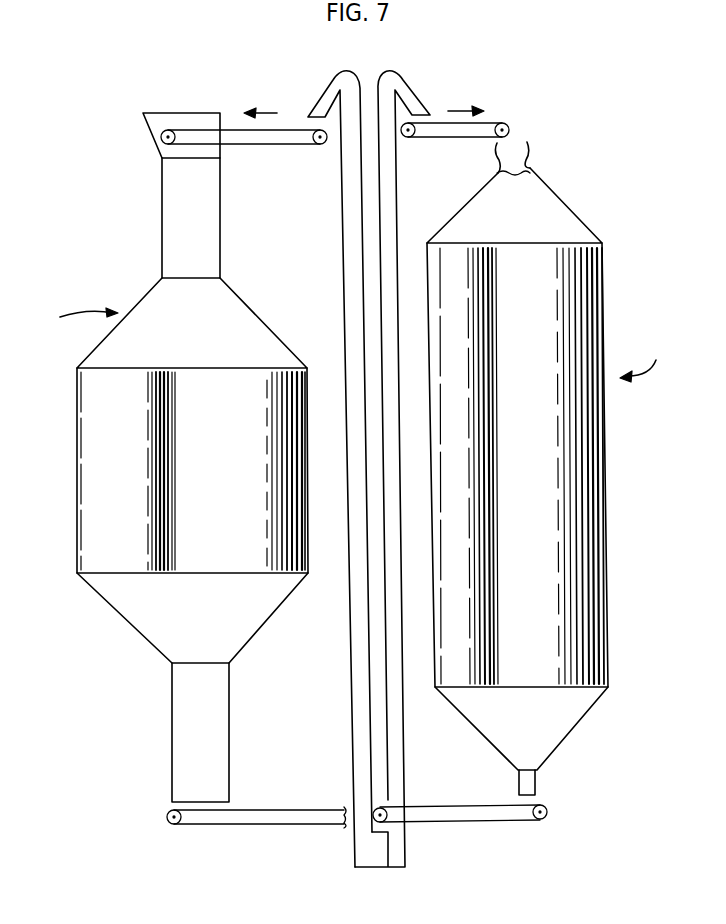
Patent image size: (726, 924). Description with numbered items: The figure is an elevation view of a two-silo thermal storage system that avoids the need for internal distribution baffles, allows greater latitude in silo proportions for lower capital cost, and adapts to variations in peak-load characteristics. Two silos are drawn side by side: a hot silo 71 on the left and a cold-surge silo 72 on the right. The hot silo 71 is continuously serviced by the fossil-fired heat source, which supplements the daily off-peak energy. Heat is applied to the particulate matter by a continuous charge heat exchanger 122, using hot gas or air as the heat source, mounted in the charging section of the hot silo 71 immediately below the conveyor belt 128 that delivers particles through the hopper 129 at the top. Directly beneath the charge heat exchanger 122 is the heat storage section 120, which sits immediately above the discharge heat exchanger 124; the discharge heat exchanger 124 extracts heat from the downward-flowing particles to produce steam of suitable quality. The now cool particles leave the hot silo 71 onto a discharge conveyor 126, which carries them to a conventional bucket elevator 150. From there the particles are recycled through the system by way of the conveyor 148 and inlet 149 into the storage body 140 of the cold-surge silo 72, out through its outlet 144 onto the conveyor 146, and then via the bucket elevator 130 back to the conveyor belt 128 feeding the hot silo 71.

The hot silo 71 is at (84, 325).
The cold-surge silo 72 is at (640, 360).
The heat storage section 120 is at (96, 498).
The continuous charge heat exchanger 122 is at (172, 206).
The discharge heat exchanger 124 is at (181, 722).
The discharge conveyor 126 is at (295, 822).
The conveyor belt 128 is at (252, 147).
The feed hopper 129 is at (199, 111).
The bucket elevator 130 is at (348, 230).
The second vessel 140 is at (596, 502).
The outlet 144 is at (536, 786).
The conveyor 146 is at (462, 822).
The upper conveyor 148 is at (492, 122).
The inlet neck 149 is at (531, 143).
The bucket elevator 150 is at (387, 215).